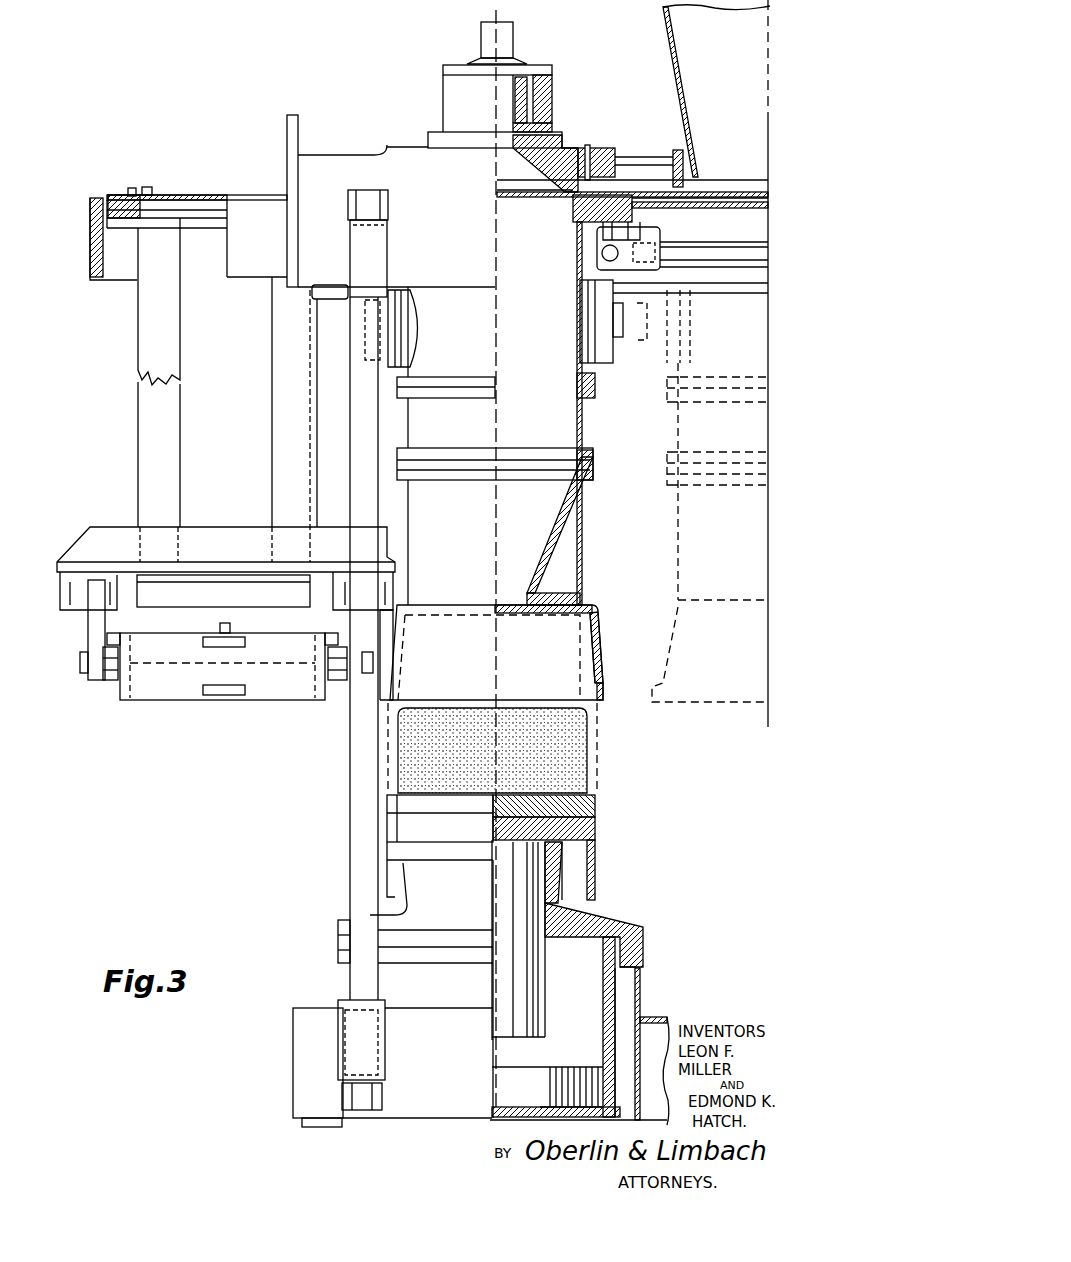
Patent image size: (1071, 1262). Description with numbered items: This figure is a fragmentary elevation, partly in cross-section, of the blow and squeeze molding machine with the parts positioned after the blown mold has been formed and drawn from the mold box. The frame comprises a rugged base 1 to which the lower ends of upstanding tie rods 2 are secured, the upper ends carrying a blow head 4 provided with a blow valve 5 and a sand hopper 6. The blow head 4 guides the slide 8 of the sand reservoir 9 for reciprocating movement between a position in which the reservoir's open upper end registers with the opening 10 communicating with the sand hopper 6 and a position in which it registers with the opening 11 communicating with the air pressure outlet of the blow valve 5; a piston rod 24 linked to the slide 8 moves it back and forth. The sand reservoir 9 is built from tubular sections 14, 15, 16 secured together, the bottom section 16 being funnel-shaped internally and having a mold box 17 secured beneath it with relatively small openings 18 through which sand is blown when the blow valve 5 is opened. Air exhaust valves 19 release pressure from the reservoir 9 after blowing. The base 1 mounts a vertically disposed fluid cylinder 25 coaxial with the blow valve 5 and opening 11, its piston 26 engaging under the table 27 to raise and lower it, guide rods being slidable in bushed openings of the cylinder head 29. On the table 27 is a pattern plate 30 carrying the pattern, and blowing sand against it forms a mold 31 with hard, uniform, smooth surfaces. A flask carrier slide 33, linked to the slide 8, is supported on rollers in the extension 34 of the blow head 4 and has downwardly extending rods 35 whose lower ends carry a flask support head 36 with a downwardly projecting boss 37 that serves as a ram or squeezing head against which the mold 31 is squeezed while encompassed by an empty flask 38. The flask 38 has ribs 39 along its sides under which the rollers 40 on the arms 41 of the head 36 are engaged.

The base 1 is at (656, 993).
The tie rods 2 is at (350, 812).
The blow head 4 is at (342, 153).
The blow valve 5 is at (443, 100).
The sand hopper 6 is at (682, 100).
The slide 8 is at (573, 216).
The sand reservoir 9 is at (592, 434).
The opening 10 is at (718, 184).
The opening 11 is at (552, 173).
The tubular section 14 is at (446, 342).
The tubular section 15 is at (495, 439).
The bottom section 16 is at (448, 542).
The mold box 17 is at (593, 660).
The openings 18 is at (517, 618).
The air exhaust valves 19 is at (392, 322).
The piston rod 24 is at (705, 256).
The fluid cylinder 25 is at (603, 997).
The piston 26 is at (528, 990).
The table 27 is at (597, 832).
The cylinder head 29 is at (627, 930).
The pattern plate 30 is at (434, 806).
The mold 31 is at (578, 752).
The flask carrier slide 33 is at (202, 224).
The extension 34 is at (90, 258).
The rods 35 is at (138, 424).
The flask support head 36 is at (106, 527).
The boss 37 is at (240, 592).
The empty flask 38 is at (195, 700).
The ribs 39 is at (112, 636).
The rollers 40 is at (110, 682).
The arms 41 is at (95, 676).